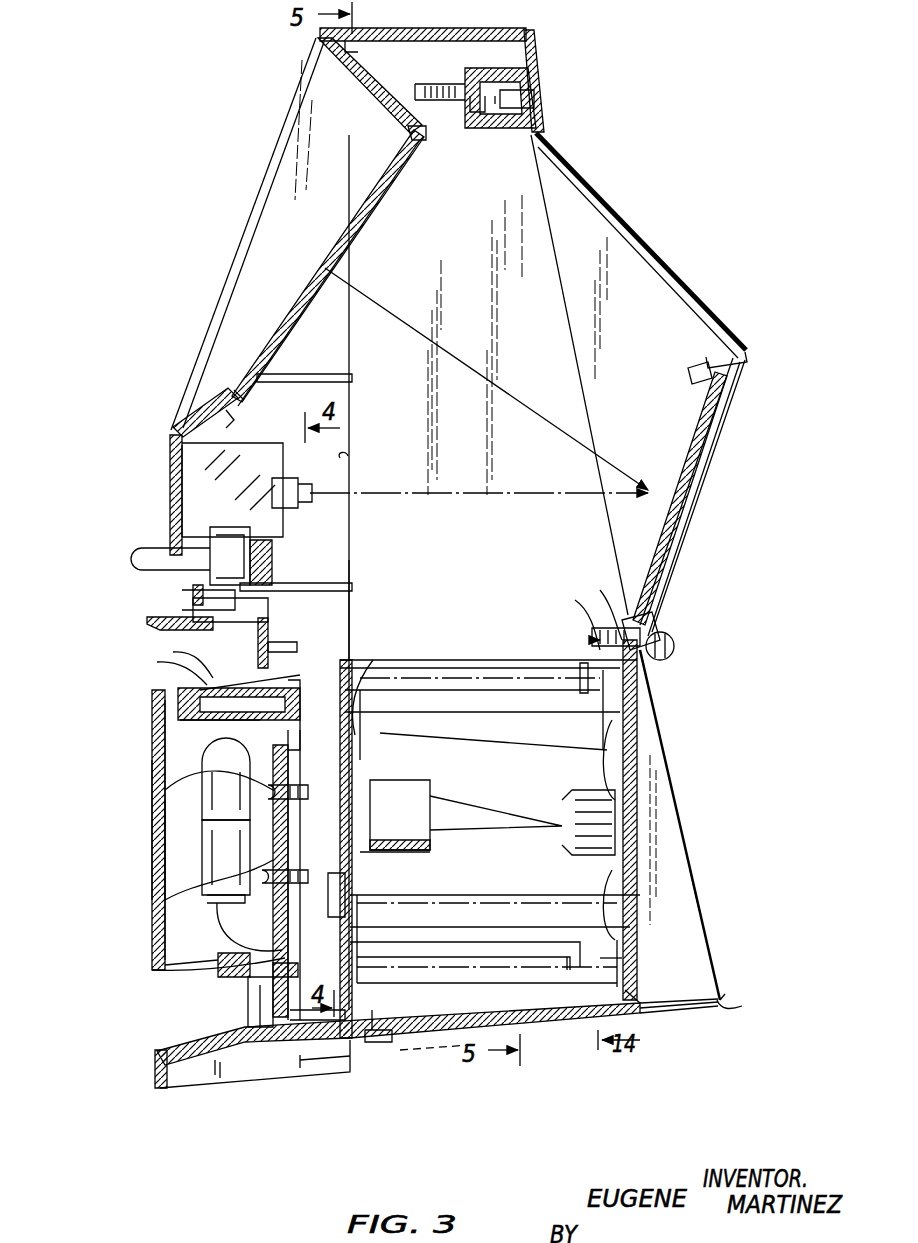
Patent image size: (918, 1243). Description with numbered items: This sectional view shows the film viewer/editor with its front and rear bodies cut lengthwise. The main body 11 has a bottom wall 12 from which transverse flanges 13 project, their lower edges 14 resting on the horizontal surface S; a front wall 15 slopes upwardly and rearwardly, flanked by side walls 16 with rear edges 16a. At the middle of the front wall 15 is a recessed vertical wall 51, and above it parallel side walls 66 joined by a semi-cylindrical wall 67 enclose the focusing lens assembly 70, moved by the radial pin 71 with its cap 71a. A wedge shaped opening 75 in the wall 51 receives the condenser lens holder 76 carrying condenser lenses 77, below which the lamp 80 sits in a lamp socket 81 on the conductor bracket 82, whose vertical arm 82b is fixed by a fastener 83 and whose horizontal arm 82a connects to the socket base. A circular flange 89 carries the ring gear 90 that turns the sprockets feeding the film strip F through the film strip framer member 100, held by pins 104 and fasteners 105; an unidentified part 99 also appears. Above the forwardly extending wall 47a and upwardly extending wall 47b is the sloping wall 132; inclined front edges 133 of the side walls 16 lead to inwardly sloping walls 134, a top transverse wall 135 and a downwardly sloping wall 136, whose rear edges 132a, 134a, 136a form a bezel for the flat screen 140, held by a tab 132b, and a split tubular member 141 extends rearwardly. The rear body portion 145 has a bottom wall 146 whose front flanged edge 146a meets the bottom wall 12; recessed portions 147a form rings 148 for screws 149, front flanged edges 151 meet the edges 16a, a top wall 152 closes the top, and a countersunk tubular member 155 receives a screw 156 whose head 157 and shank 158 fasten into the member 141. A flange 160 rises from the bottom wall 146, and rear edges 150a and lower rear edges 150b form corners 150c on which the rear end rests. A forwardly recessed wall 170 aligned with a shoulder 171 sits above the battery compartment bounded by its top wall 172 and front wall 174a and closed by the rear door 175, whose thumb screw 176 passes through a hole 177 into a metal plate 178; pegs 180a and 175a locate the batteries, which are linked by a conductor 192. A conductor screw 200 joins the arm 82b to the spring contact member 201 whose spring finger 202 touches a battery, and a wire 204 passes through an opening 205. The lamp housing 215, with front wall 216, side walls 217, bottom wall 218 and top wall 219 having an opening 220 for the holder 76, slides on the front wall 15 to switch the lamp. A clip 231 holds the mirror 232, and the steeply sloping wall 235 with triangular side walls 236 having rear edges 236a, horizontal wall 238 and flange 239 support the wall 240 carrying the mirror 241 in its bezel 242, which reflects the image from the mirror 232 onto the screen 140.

The main body 11 is at (152, 1070).
The bottom wall 12 is at (270, 1043).
The transverse flanges 13 is at (330, 1063).
The lower edges 14 is at (317, 1077).
The front wall 15 is at (258, 1010).
The side walls 16 is at (340, 560).
The rear edges 16a is at (348, 628).
The forwardly extending wall 47a is at (182, 490).
The upwardly extending wall 47b is at (172, 448).
The rearwardly recessed vertical wall 51 is at (235, 965).
The parallel side walls 66 is at (270, 612).
The semi-cylindrical wall 67 is at (190, 600).
The focusing lens assembly 70 is at (215, 566).
The radial handle or pin 71 is at (220, 548).
The cap 71a is at (140, 555).
The transverse rectangular wedge shaped opening 75 is at (312, 712).
The condenser lens holder 76 is at (153, 750).
The condenser lenses 77 is at (165, 668).
The lamp 80 is at (200, 780).
The lamp socket 81 is at (200, 870).
The angular conductor bracket 82 is at (273, 900).
The horizontal arm 82a is at (200, 920).
The vertical arm 82b is at (170, 900).
The fastener 83 is at (380, 852).
The circular flange 89 is at (305, 860).
The ring gear 90 is at (310, 795).
The rod 99 is at (312, 955).
The film strip framer member 100 is at (145, 628).
The rearwardly extending pins 104 is at (297, 648).
The fasteners 105 is at (270, 640).
The upwardly and rearwardly sloping wall 132 is at (212, 402).
The rear edge 132a is at (252, 425).
The tab 132b is at (232, 382).
The inclined front edges 133 is at (258, 198).
The inwardly sloping walls 134 is at (253, 235).
The rear edge 134a is at (368, 200).
The top transverse wall 135 is at (360, 40).
The downwardly and rearwardly sloping wall 136 is at (368, 55).
The rear edge 136a is at (410, 133).
The flat screen 140 is at (352, 233).
The split tubular member 141 is at (458, 128).
The rear body portion 145 is at (690, 752).
The bottom wall 146 is at (560, 1030).
The front flanged edge 146a is at (380, 1046).
The half rounded upwardly recessed portions 147a is at (410, 1012).
The rings 148 is at (386, 1046).
The screws 149 is at (440, 1070).
The rear edges 150a is at (680, 900).
The lower rear edges 150b is at (680, 1012).
The corners 150c is at (744, 1006).
The front flanged edges 151 is at (350, 458).
The top wall 152 is at (455, 35).
The countersunk tubular member 155 is at (536, 40).
The screw 156 is at (505, 104).
The head 157 is at (540, 84).
The shank 158 is at (452, 84).
The upward extending flange 160 is at (640, 990).
The forwardly recessed wall 170 is at (650, 680).
The shoulder 171 is at (640, 950).
The top wall of battery compartment 172 is at (476, 618).
The front wall 174a is at (380, 790).
The rear cover or door 175 is at (640, 830).
The cross-shaped peg 175a is at (580, 805).
The thumb screw 176 is at (670, 636).
The hole 177 is at (600, 590).
The metal plate 178 is at (576, 600).
The round peg 180a is at (495, 925).
The conductor 192 is at (615, 755).
The conductor screw 200 is at (370, 760).
The spring contact member 201 is at (362, 740).
The spring finger 202 is at (352, 720).
The wire 204 is at (218, 968).
The opening 205 is at (250, 990).
The lamp housing 215 is at (150, 775).
The front wall 216 is at (155, 850).
The side walls 217 is at (152, 825).
The bottom wall 218 is at (240, 980).
The top wall 219 is at (178, 700).
The opening 220 is at (175, 692).
The clip 231 is at (288, 508).
The rectangular mirror 232 is at (270, 450).
The steeply sloping wall 235 is at (652, 242).
The rearwardly and inwardly sloping side walls 236 is at (650, 300).
The rear edges 236a is at (705, 480).
The horizontal wall 238 is at (740, 372).
The horizontal flange 239 is at (655, 612).
The wall 240 is at (695, 445).
The rectangular mirror 241 is at (685, 415).
The bezel 242 is at (688, 372).
The film strip F is at (188, 658).
The horizontal surface S is at (730, 992).